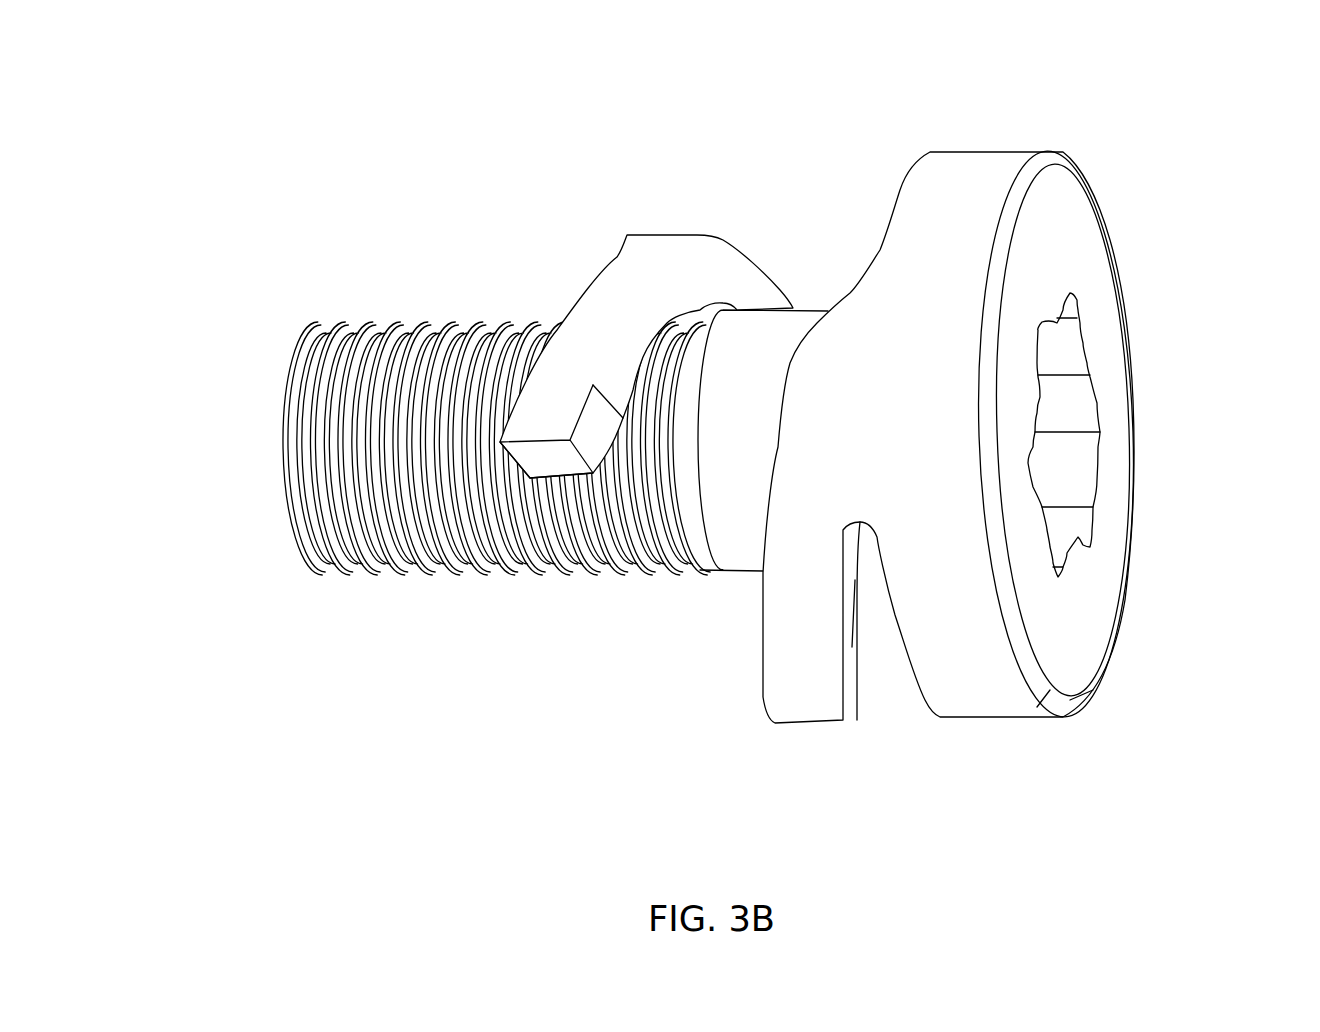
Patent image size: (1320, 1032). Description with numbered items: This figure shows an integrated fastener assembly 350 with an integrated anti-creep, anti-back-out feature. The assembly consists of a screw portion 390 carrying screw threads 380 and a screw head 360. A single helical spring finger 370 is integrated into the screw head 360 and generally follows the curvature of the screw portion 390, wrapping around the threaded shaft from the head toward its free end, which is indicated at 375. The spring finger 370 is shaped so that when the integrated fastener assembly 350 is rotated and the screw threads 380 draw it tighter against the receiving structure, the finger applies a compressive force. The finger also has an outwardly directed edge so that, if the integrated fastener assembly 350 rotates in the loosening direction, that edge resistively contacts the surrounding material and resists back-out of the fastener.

The integrated fastener assembly 350 is at (735, 367).
The screw head 360 is at (1120, 355).
The spring finger 370 is at (646, 304).
The tab end face 375 is at (612, 441).
The screw threads 380 is at (432, 410).
The screw portion 390 is at (282, 442).